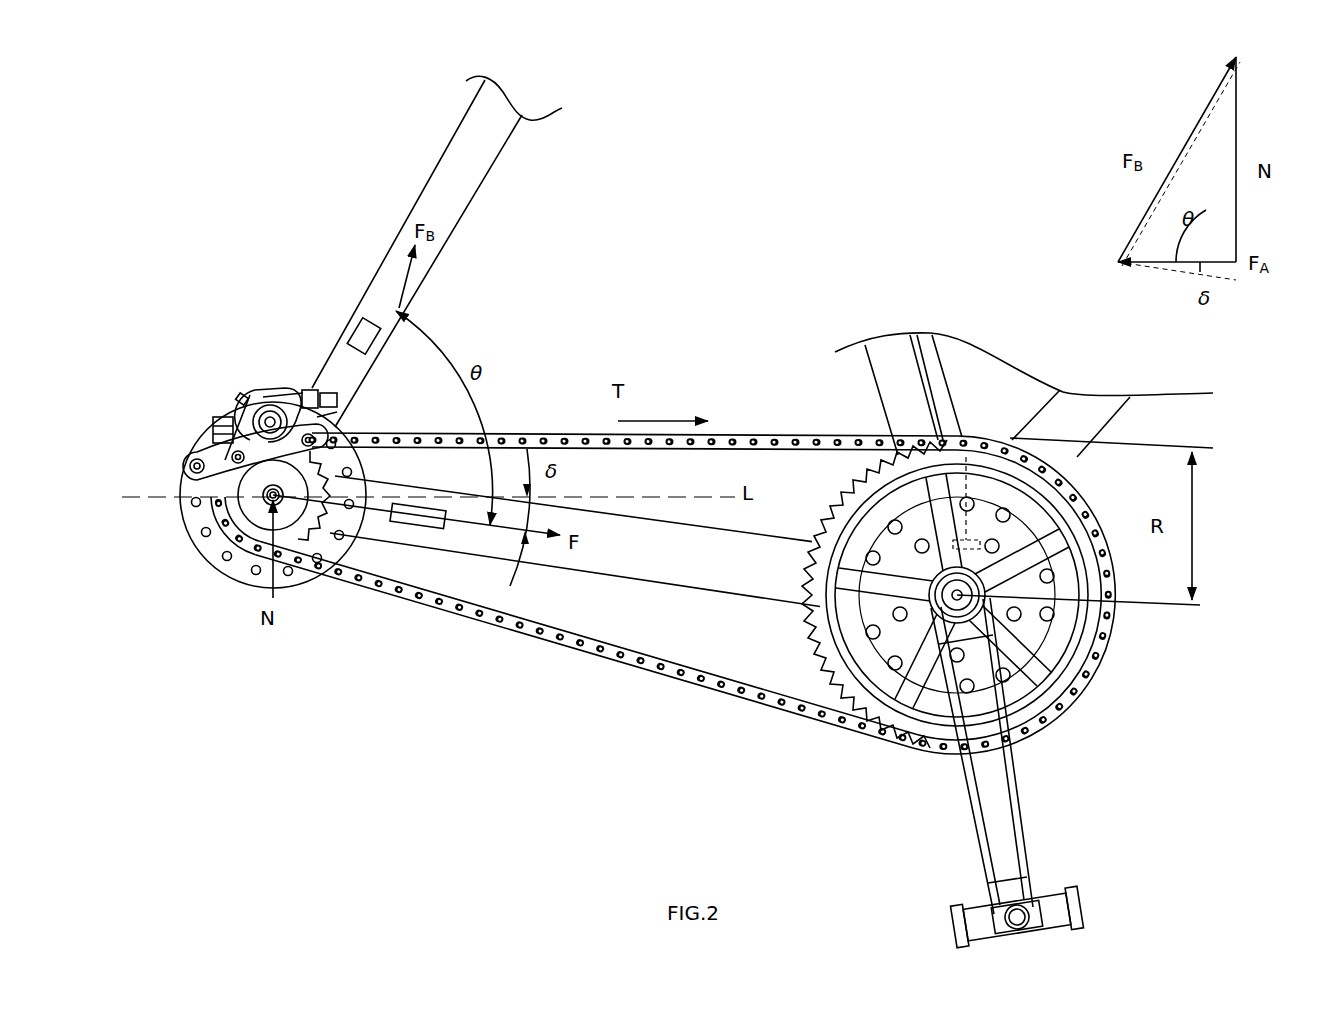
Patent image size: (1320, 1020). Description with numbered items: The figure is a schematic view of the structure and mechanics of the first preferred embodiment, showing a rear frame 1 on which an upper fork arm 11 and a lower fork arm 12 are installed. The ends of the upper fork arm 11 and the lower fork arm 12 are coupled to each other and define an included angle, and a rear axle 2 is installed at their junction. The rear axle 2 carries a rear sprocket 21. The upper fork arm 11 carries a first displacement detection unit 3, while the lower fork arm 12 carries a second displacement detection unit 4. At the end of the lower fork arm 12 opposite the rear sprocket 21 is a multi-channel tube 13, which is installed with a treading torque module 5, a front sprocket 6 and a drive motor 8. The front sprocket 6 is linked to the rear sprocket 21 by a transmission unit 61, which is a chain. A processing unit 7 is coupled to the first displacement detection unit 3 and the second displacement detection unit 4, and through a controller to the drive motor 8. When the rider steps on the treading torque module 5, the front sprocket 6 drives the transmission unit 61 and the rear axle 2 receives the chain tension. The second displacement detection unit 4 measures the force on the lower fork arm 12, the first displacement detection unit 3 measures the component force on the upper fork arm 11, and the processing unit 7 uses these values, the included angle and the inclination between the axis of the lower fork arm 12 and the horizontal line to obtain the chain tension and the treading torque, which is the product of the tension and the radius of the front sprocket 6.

The rear frame 1 is at (430, 124).
The upper fork arm 11 is at (435, 200).
The first displacement detection unit 3 is at (365, 318).
The rear axle 2 is at (235, 413).
The rear sprocket 21 is at (298, 540).
The lower fork arm 12 is at (700, 578).
The second displacement detection unit 4 is at (430, 520).
The drive motor 8 is at (1105, 625).
The transmission unit 61 is at (765, 695).
The front sprocket 6 is at (855, 718).
The multi-channel tube 13 is at (1133, 608).
The treading torque module 5 is at (1018, 694).
The processing unit 7 is at (966, 457).